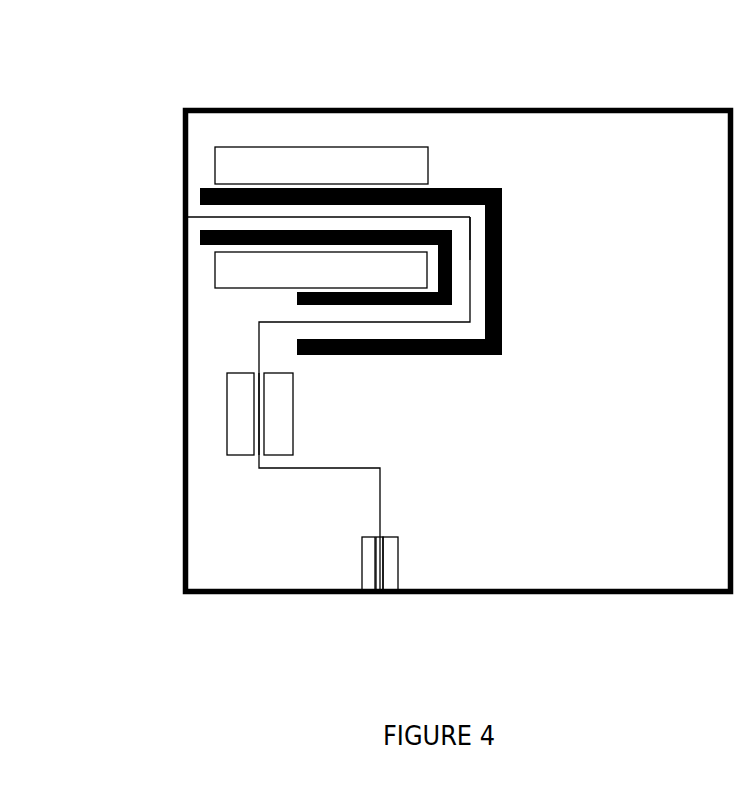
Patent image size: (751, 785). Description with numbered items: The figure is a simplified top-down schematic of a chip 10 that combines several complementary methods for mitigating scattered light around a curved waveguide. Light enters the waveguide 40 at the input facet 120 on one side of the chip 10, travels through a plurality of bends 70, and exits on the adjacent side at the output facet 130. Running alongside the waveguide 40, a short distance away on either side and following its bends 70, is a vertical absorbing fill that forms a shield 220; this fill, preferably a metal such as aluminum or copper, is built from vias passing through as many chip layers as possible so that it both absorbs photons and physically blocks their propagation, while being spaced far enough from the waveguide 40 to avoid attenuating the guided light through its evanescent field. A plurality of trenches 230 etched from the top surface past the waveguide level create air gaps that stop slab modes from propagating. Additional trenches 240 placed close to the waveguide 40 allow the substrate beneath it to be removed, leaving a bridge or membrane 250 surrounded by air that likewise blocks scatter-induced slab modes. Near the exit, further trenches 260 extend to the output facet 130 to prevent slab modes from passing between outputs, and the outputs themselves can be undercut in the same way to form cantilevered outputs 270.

The chip 10 is at (178, 118).
The input facet 120 is at (178, 213).
The vertical absorbing fill shield 220 is at (455, 185).
The trenches 230 is at (308, 140).
The bends 70 is at (473, 219).
The waveguide 40 is at (473, 273).
The trenches 240 is at (225, 415).
The bridge, beam or membrane 250 is at (250, 438).
The trenches 260 is at (357, 543).
The cantilevered outputs 270 is at (385, 575).
The output facet 130 is at (379, 596).